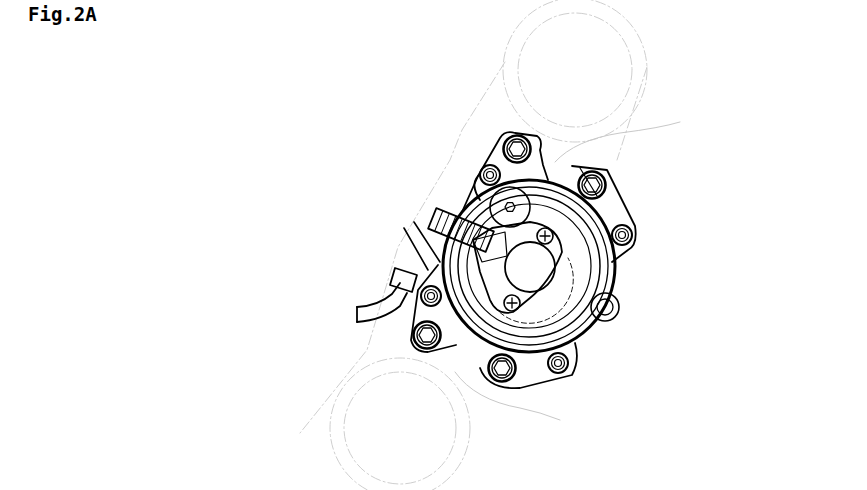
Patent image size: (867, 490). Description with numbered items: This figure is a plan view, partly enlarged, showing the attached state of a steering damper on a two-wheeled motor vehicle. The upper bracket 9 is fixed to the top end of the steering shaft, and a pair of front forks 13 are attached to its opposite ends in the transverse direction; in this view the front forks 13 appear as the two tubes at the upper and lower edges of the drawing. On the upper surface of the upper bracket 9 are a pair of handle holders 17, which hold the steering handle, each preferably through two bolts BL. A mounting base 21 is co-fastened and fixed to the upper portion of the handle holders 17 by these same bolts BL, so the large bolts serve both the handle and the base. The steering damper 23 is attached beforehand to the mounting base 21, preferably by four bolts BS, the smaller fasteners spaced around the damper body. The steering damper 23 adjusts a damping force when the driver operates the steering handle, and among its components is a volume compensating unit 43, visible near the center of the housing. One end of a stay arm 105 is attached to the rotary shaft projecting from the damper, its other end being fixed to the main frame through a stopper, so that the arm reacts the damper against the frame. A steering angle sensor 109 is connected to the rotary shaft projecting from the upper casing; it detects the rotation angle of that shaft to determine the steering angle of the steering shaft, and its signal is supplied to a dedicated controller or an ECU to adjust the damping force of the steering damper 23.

The upper bracket 9 is at (405, 248).
The front forks 13 is at (587, 77).
The handle holders 17 is at (567, 147).
The mounting base 21 is at (623, 203).
The steering damper 23 is at (617, 267).
The volume compensating unit 43 is at (475, 186).
The stay arm 105 is at (620, 315).
The steering angle sensor 109 is at (470, 190).
The bolts BL is at (506, 146).
The bolts BS is at (487, 163).